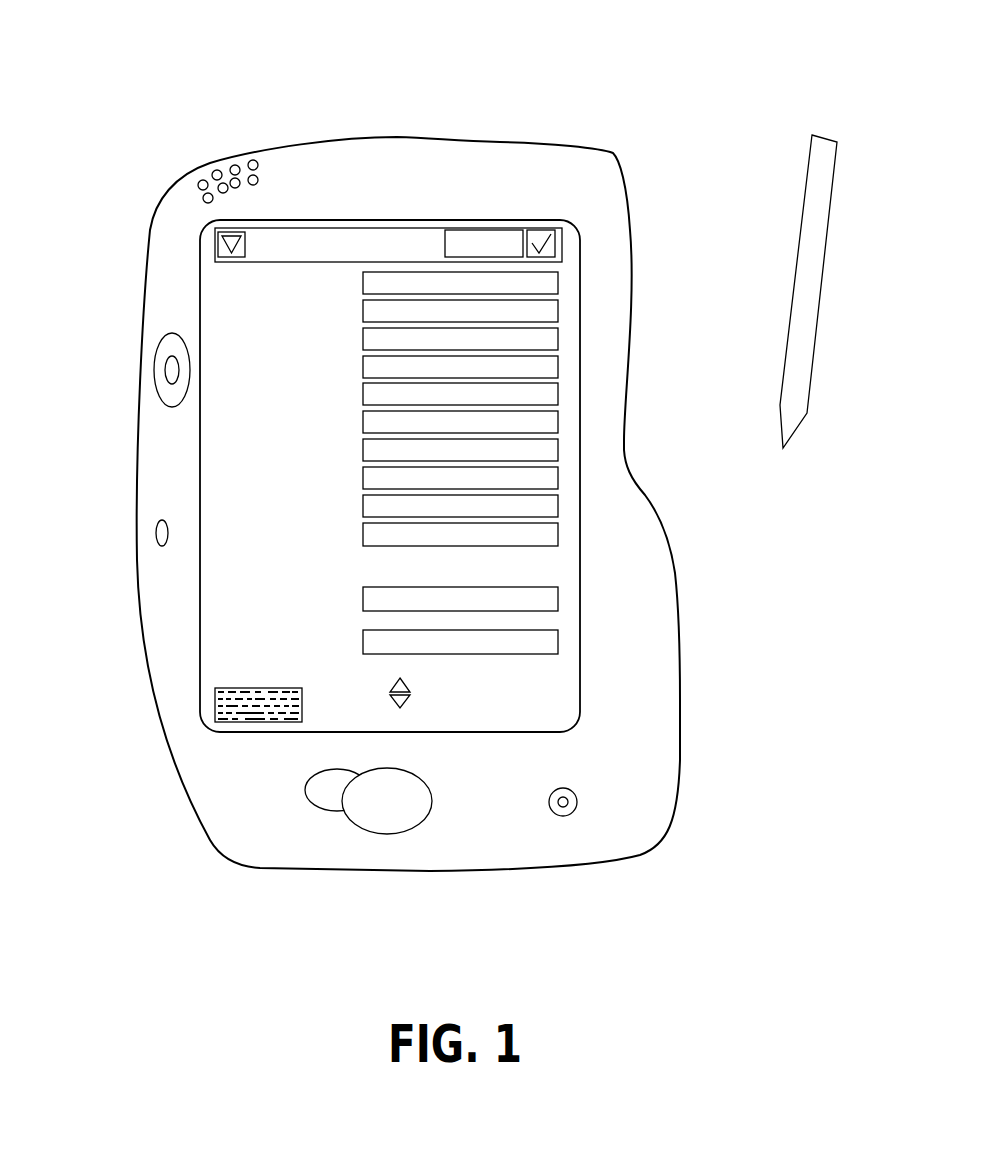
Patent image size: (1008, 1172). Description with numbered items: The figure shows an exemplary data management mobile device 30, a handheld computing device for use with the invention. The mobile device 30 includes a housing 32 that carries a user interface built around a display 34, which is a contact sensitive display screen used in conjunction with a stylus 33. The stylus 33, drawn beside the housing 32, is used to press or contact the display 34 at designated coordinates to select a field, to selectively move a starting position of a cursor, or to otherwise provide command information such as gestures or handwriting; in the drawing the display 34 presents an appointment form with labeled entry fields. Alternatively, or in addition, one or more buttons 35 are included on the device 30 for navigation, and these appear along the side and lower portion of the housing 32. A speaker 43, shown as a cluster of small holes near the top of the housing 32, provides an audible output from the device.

The data management mobile device 30 is at (132, 92).
The housing 32 is at (484, 404).
The stylus 33 is at (817, 317).
The display 34 is at (525, 530).
The buttons 35 is at (165, 360).
The speaker 43 is at (236, 165).